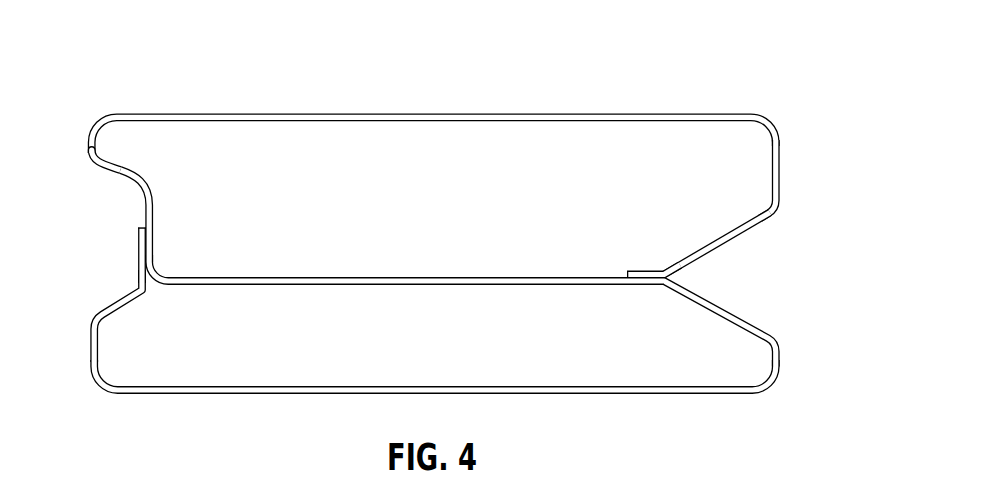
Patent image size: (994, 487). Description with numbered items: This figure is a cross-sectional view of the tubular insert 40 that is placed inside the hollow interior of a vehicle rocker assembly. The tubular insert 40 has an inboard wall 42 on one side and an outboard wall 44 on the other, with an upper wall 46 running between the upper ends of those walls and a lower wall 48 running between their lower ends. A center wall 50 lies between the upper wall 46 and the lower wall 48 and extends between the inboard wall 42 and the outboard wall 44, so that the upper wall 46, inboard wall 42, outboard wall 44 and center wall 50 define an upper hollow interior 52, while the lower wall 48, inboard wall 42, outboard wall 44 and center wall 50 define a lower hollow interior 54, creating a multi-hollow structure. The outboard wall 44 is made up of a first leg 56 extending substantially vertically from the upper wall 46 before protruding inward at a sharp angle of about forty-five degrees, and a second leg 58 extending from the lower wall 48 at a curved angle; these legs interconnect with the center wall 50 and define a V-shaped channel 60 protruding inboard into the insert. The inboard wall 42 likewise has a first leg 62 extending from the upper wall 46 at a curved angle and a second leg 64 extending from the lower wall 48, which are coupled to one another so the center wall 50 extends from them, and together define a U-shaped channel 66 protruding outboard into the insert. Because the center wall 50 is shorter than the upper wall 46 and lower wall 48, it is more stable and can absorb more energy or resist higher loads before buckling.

The tubular insert 40 is at (734, 78).
The inboard wall 42 is at (118, 172).
The outboard wall 44 is at (779, 156).
The upper wall 46 is at (458, 114).
The lower wall 48 is at (508, 394).
The center wall 50 is at (263, 285).
The upper hollow interior 52 is at (428, 216).
The lower hollow interior 54 is at (428, 346).
The first leg 56 is at (779, 185).
The second leg 58 is at (757, 331).
The channel 60 is at (742, 284).
The first leg 62 is at (137, 185).
The second leg 64 is at (93, 319).
The channel 66 is at (126, 262).